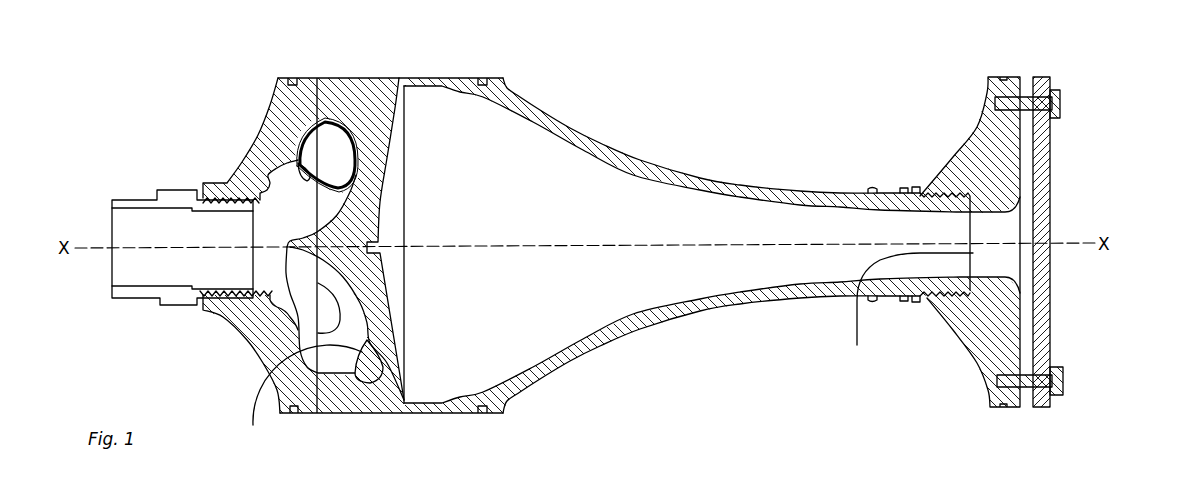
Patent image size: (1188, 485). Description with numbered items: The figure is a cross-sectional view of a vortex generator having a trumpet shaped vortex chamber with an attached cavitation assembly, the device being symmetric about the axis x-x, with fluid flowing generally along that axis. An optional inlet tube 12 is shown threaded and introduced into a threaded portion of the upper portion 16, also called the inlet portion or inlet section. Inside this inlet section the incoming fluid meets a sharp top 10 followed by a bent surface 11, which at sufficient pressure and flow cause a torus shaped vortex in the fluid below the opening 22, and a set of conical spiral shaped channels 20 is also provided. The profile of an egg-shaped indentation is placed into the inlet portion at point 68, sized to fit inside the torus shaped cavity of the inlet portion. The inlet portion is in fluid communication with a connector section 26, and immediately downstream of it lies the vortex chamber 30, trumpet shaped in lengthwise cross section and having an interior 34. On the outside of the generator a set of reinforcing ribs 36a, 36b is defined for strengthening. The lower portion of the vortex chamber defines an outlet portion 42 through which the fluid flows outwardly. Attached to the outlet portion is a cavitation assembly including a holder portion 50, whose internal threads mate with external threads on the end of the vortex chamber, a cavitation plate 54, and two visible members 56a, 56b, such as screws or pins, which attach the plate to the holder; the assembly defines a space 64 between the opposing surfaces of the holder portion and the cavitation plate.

The sharp top 10 is at (277, 303).
The bent surface 11 is at (303, 364).
The inlet tube 12 is at (140, 197).
The upper portion 16 is at (350, 83).
The conical spiral shaped channels 20 is at (312, 137).
The opening 22 is at (117, 227).
The connector section 26 is at (420, 347).
The vortex chamber 30 is at (618, 147).
The interior 34 is at (533, 273).
The reinforcing rib 36a is at (870, 188).
The reinforcing rib 36b is at (908, 188).
The outlet portion 42 is at (910, 310).
The holder portion 50 is at (977, 123).
The cavitation plate 54 is at (1047, 167).
The attachment member 56a is at (1060, 100).
The attachment member 56b is at (1063, 378).
The space 64 is at (1028, 220).
The point 68 is at (295, 133).